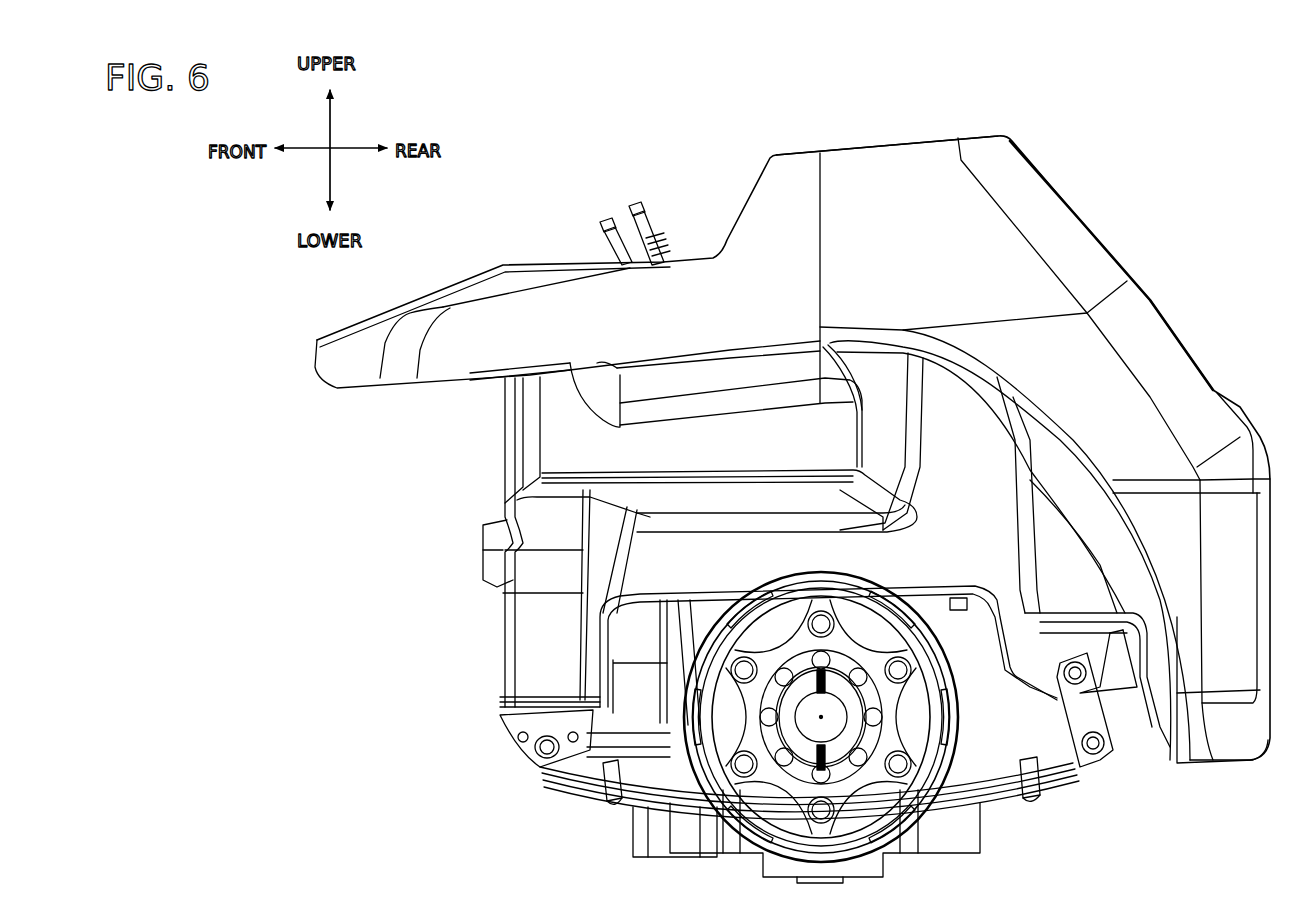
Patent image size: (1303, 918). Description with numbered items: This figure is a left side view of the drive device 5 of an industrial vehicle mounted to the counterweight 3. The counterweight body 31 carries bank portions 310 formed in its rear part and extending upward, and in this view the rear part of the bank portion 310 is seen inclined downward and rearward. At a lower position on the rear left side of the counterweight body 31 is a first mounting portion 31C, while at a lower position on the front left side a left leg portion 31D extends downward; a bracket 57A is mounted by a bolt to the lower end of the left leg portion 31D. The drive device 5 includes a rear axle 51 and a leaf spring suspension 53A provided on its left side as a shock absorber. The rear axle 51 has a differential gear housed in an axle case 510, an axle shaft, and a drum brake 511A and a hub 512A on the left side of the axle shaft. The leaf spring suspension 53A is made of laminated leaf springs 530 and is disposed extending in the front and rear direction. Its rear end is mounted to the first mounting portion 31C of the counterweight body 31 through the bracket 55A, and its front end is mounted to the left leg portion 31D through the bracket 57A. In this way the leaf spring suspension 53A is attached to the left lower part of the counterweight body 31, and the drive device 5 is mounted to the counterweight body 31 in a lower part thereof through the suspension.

The counterweight 3 is at (1090, 137).
The bank portion 310 is at (893, 157).
The counterweight body 31 is at (327, 396).
The first mounting portion 31C is at (1100, 660).
The left leg portion 31D is at (520, 648).
The drive device 5 is at (980, 852).
The rear axle 51 is at (858, 705).
The drum brake 511A is at (883, 581).
The hub 512A is at (800, 665).
The axle case 510 is at (667, 844).
The leaf spring 530 is at (1007, 797).
The leaf spring suspension 53A is at (1079, 785).
The bracket 55A is at (1083, 736).
The bracket 57A is at (507, 722).